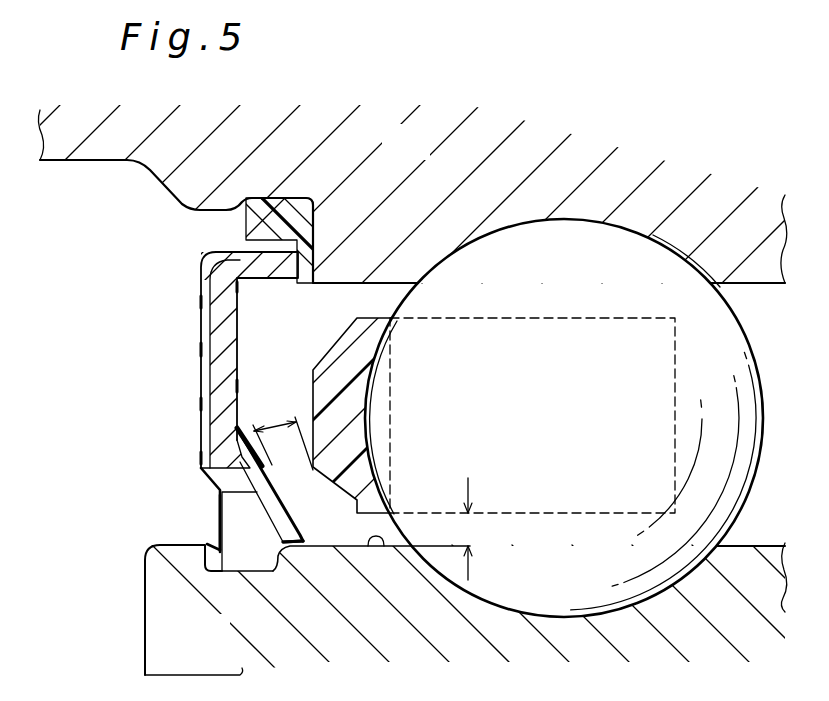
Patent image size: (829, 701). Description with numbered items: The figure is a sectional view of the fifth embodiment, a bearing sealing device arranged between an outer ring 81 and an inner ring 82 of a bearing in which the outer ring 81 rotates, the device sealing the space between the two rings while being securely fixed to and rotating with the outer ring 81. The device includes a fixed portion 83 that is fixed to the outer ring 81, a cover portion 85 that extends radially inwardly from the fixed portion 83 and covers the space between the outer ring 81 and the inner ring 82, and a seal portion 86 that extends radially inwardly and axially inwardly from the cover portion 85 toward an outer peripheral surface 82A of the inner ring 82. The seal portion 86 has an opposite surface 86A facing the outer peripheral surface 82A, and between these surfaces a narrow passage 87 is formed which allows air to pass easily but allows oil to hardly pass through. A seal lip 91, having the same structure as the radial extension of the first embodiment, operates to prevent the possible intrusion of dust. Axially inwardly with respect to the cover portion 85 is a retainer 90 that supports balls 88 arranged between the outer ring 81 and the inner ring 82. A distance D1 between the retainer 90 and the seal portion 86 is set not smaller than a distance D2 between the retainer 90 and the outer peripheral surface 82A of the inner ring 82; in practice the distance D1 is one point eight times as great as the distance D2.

The outer ring 81 is at (426, 157).
The inner ring 82 is at (224, 650).
The outer peripheral surface 82A is at (377, 546).
The fixed portion 83 is at (254, 211).
The cover portion 85 is at (201, 302).
The seal portion 86 is at (258, 506).
The opposite surface 86A is at (293, 549).
The narrow passage 87 is at (306, 544).
The balls 88 is at (600, 280).
The retainer 90 is at (335, 357).
The seal lip 91 is at (215, 533).
The distance D1 is at (273, 423).
The distance D2 is at (470, 527).